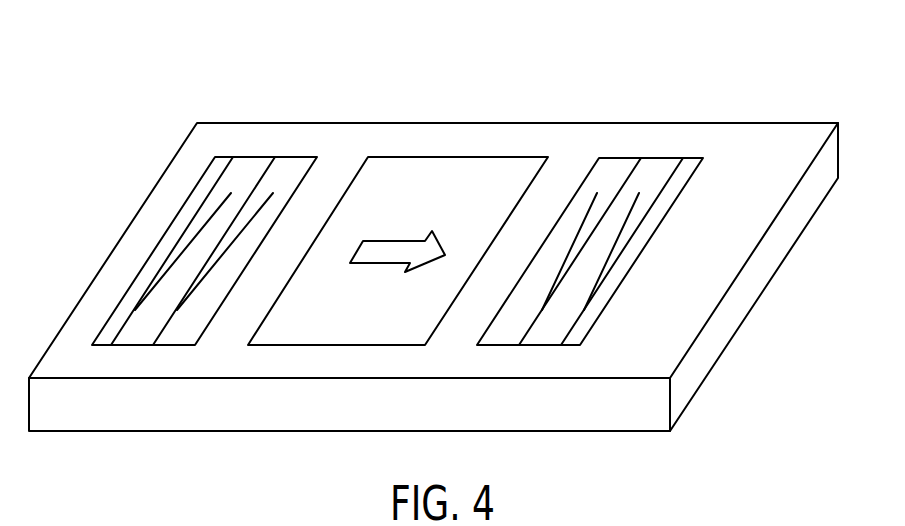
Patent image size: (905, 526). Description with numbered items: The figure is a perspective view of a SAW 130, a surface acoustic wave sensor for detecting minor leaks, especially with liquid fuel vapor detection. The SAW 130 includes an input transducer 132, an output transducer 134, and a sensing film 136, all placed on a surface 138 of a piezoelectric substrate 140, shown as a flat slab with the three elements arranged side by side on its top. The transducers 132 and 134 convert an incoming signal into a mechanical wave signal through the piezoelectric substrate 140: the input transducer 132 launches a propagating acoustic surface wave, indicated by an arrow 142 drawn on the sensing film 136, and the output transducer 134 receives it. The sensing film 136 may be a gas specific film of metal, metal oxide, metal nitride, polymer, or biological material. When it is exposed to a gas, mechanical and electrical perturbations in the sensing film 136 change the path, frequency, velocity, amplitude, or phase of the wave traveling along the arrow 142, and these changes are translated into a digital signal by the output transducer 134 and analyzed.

The SAW 130 is at (346, 46).
The input transducer 132 is at (254, 157).
The output transducer 134 is at (627, 157).
The sensing film 136 is at (460, 157).
The surface 138 is at (762, 150).
The piezoelectric substrate 140 is at (778, 236).
The arrow 142 is at (380, 263).